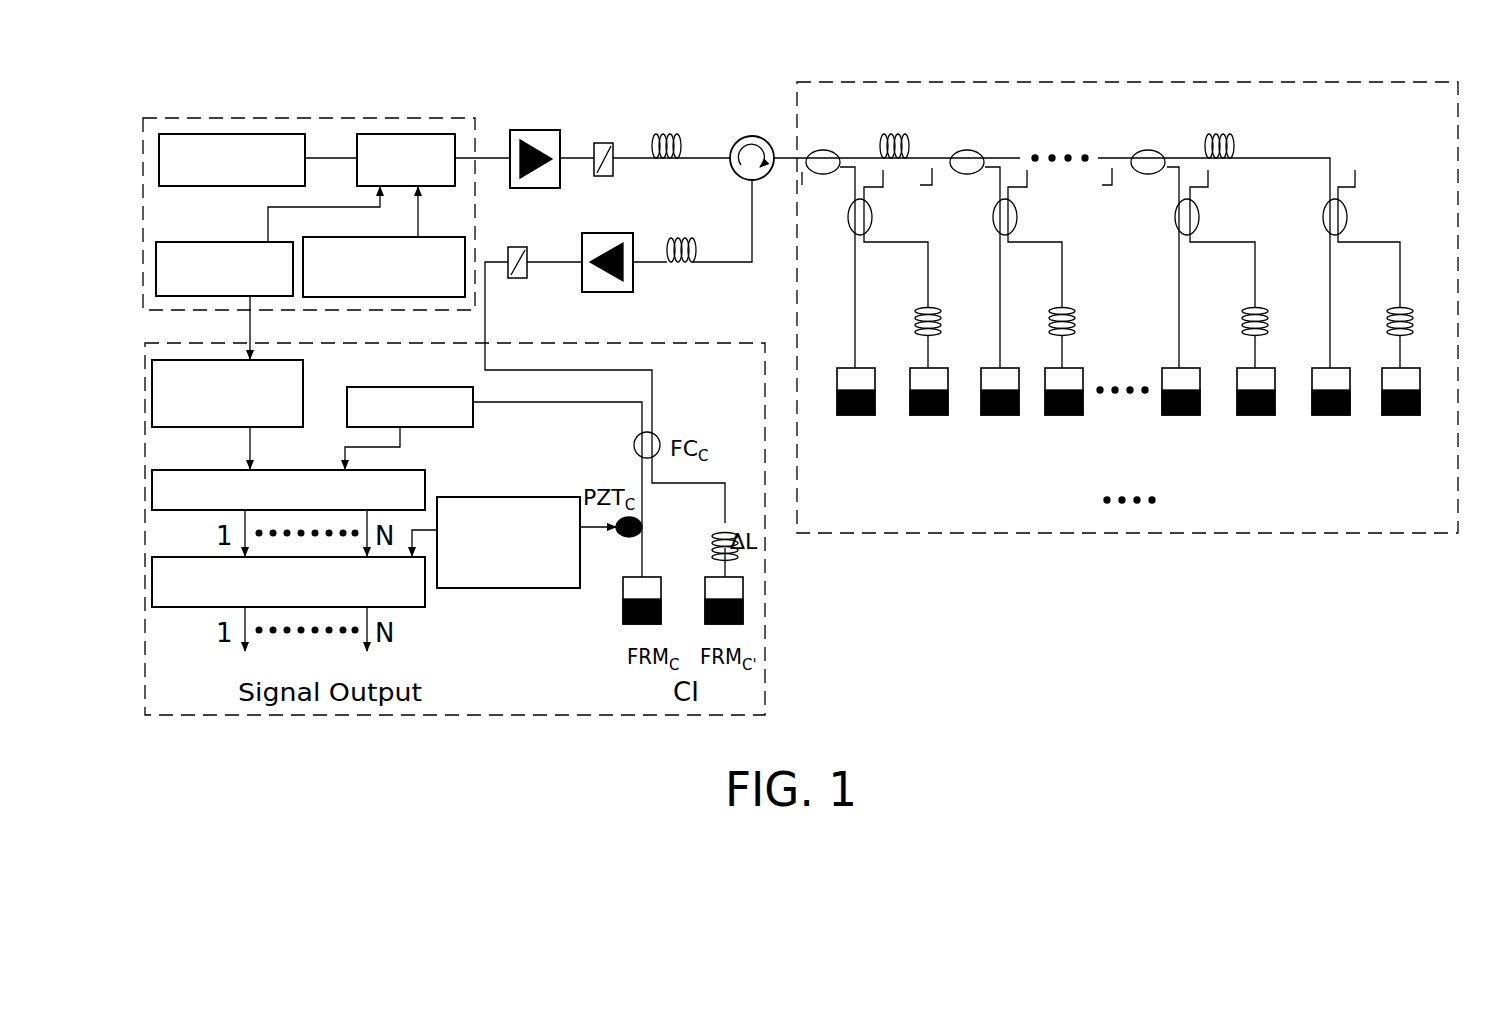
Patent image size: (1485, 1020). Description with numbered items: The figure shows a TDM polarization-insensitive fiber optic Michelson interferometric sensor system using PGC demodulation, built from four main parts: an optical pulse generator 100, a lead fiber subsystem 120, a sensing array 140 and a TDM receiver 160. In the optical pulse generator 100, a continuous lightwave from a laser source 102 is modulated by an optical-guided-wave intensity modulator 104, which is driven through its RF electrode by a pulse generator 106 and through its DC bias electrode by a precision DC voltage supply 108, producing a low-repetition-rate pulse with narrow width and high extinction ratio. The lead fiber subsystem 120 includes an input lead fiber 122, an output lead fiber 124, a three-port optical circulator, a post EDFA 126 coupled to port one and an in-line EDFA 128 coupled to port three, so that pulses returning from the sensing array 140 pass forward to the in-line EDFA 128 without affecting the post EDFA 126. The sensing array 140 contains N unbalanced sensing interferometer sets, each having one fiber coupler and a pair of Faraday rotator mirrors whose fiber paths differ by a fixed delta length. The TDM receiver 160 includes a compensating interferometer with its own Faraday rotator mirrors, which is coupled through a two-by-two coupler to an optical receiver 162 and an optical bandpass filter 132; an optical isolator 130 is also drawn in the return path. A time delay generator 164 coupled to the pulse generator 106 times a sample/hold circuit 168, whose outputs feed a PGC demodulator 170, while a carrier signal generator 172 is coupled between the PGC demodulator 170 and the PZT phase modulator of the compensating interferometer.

The optical pulse generator 100 is at (350, 118).
The laser source 102 is at (275, 140).
The optical-guided-wave (OGW) intensity modulator 104 is at (430, 140).
The pulse generator 106 is at (195, 242).
The precision DC voltage supply 108 is at (466, 236).
The lead fiber subsystem 120 is at (661, 115).
The input lead fiber 122 is at (680, 145).
The output lead fiber 124 is at (694, 250).
The post EDFA 126 is at (530, 130).
The in-line EDFA 128 is at (612, 292).
The optical isolator 130 is at (600, 143).
The optical bandpass filter (OBPF) 132 is at (520, 278).
The sensing array 140 is at (1173, 544).
The TDM receiver 160 is at (765, 620).
The optical receiver 162 is at (473, 406).
The time delay generator 164 is at (303, 390).
The sample/hold circuit 168 is at (425, 500).
The PGC demodulator 170 is at (415, 607).
The carrier signal generator 172 is at (530, 588).